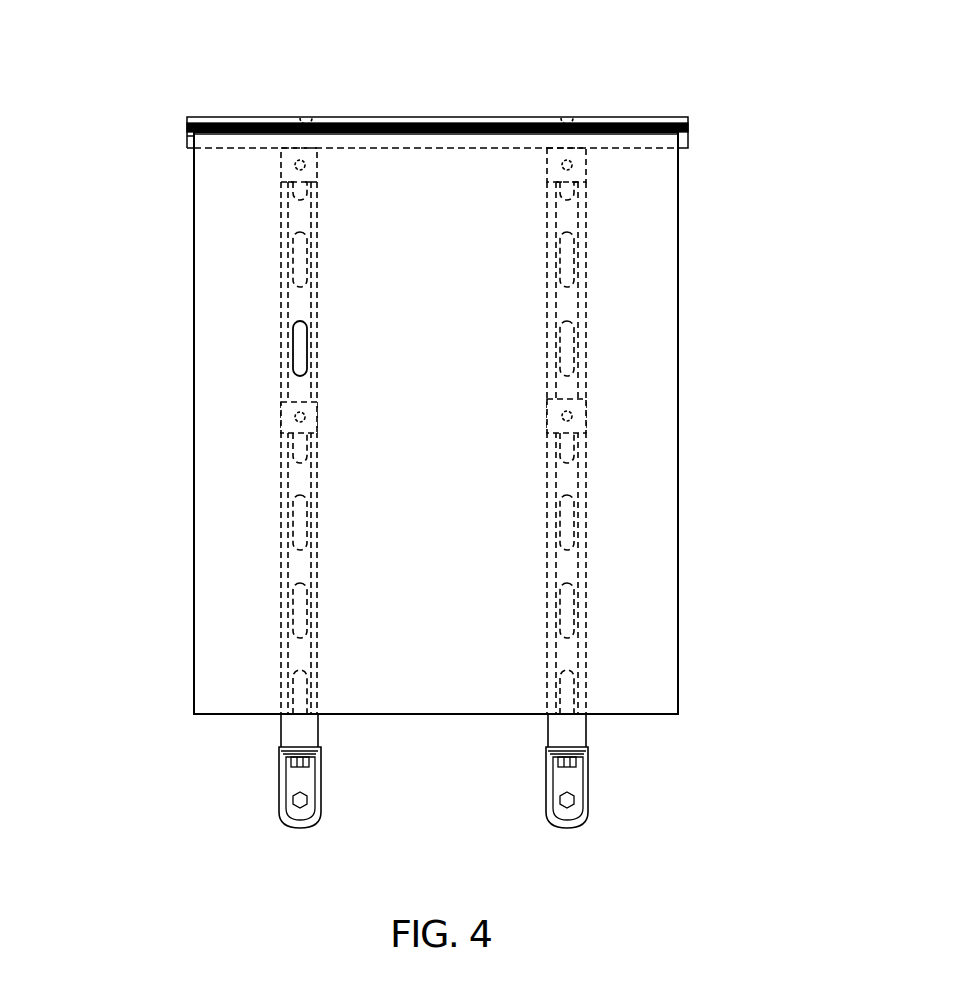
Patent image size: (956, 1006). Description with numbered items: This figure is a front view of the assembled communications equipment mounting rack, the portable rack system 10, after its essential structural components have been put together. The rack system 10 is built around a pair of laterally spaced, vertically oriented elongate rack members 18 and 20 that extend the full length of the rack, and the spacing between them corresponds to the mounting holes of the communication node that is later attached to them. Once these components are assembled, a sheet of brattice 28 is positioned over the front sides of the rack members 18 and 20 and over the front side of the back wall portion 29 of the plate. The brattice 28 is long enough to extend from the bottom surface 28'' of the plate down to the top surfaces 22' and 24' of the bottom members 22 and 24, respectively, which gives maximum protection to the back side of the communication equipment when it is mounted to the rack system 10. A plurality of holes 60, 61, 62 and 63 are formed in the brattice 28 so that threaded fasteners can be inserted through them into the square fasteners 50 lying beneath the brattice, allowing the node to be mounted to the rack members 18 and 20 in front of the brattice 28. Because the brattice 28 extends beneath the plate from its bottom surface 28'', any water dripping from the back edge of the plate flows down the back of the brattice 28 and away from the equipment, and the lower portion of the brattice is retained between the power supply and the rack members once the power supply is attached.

The portable rack system 10 is at (700, 187).
The rack member 18 is at (281, 478).
The rack member 20 is at (585, 448).
The bottom member 22 is at (208, 797).
The top surface of bottom member 22' is at (206, 683).
The bottom member 24 is at (632, 831).
The top surface of bottom member 24' is at (661, 681).
The brattice 28 is at (363, 133).
The bottom surface of plate 28'' is at (436, 192).
The back wall portion 29 is at (187, 140).
The square fastener 50 is at (489, 423).
The hole 60 is at (294, 410).
The hole 61 is at (295, 163).
The hole 62 is at (567, 148).
The hole 63 is at (585, 408).